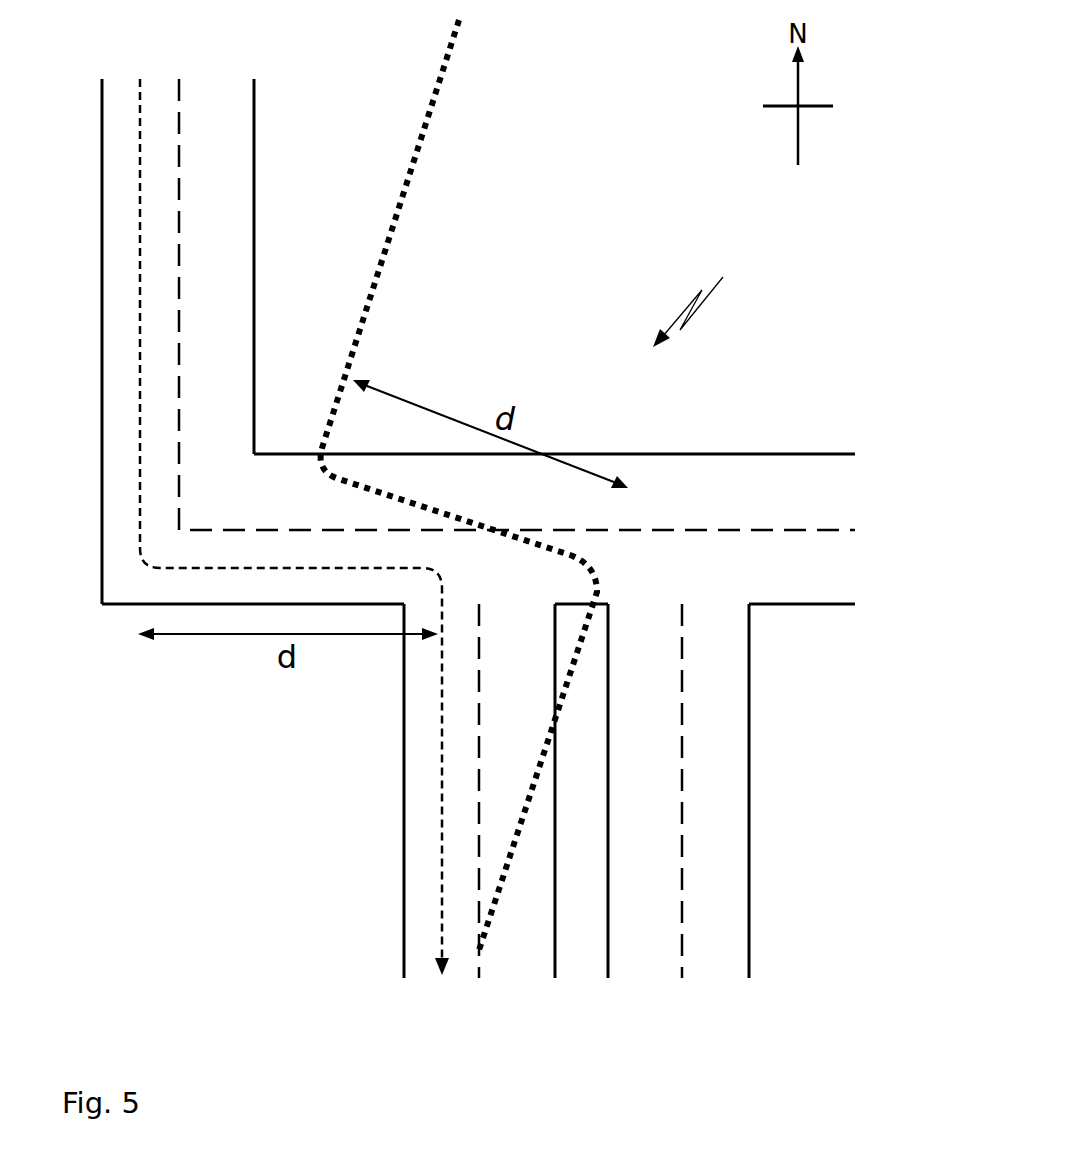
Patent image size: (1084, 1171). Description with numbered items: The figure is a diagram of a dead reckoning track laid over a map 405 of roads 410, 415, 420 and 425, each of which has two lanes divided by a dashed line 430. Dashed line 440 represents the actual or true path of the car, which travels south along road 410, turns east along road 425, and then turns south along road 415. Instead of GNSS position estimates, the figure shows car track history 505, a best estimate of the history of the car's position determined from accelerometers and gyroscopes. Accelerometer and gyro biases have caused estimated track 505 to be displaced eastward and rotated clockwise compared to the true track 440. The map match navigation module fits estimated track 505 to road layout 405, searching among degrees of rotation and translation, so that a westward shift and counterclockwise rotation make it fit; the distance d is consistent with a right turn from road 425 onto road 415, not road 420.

The map 405 is at (711, 299).
The road 410 is at (101, 68).
The road 415 is at (404, 1000).
The road 420 is at (749, 1000).
The road 425 is at (858, 454).
The dashed line 430 is at (688, 528).
The dashed line 440 is at (442, 728).
The car track history 505 is at (372, 295).